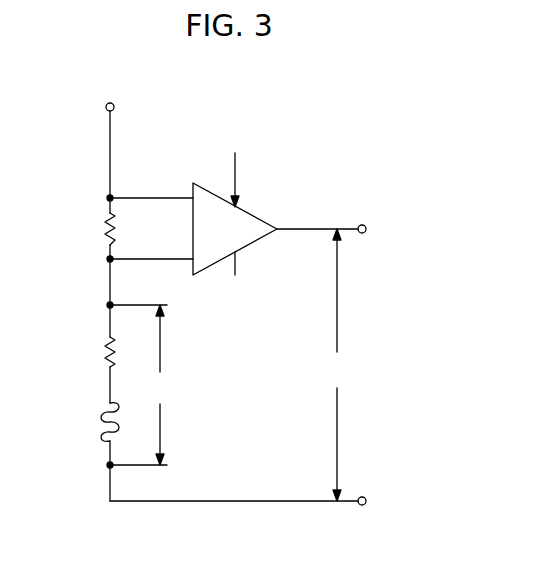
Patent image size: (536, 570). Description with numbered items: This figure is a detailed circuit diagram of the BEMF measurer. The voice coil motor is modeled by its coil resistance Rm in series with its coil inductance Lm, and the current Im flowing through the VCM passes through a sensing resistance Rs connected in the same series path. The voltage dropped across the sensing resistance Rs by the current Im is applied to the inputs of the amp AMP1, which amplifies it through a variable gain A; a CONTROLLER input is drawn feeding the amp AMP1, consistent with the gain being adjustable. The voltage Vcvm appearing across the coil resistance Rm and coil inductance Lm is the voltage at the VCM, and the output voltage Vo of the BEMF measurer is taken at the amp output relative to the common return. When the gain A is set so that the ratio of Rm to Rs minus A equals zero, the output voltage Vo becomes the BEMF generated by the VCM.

The current flowing through the VCM Im is at (111, 93).
The sensing resistance Rs is at (93, 229).
The coil resistance of the VCM Rm is at (93, 352).
The coil inductance of the VCM Lm is at (95, 422).
The amp AMP1 is at (279, 240).
The controller CONTROLLER is at (222, 166).
The voltage at the VCM Vcvm is at (145, 385).
The output voltage Vo is at (335, 365).